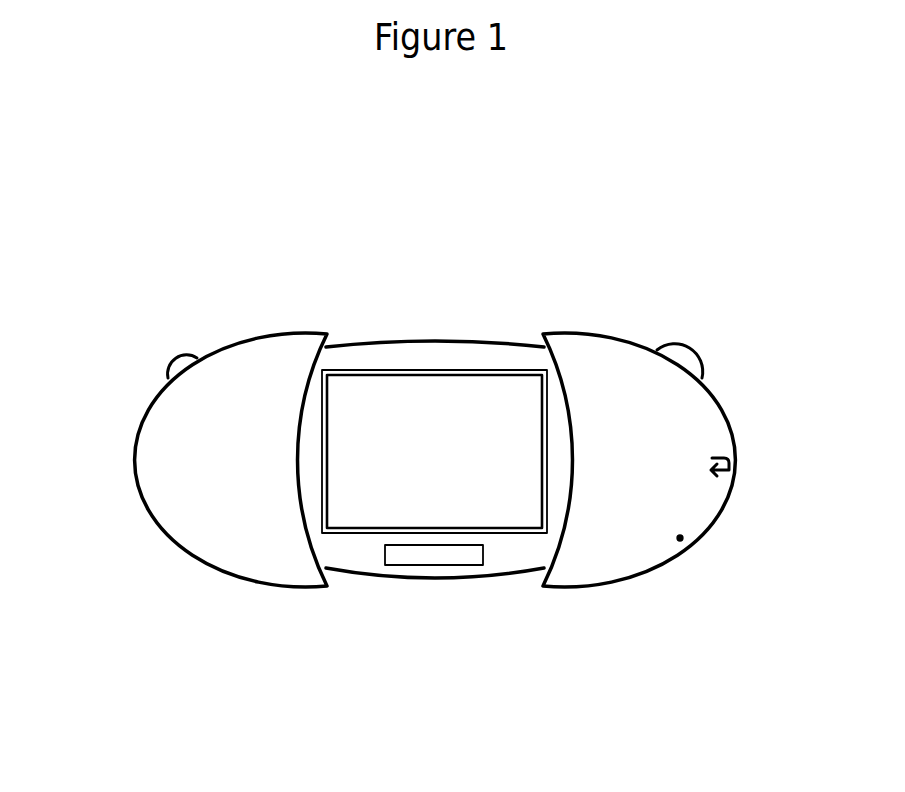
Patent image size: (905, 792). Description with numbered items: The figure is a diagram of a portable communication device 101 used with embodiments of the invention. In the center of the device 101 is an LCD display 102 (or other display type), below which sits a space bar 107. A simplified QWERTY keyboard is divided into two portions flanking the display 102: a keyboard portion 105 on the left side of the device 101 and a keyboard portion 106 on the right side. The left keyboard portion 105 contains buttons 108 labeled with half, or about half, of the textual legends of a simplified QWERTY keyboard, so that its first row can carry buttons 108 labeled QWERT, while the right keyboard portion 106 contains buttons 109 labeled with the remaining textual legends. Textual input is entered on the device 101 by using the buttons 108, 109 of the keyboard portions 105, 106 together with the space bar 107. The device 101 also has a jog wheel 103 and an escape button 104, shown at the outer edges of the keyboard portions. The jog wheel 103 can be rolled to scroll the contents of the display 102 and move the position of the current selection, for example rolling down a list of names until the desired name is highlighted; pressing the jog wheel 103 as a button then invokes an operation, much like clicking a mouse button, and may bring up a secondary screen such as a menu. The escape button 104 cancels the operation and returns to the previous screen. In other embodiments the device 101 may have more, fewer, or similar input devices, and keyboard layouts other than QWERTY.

The portable communication device 101 is at (420, 288).
The LCD display 102 is at (455, 382).
The jog wheel 103 is at (700, 360).
The escape button 104 is at (175, 355).
The keyboard portion 105 is at (172, 514).
The keyboard portion 106 is at (692, 516).
The space bar 107 is at (435, 557).
The buttons 108 is at (232, 557).
The buttons 109 is at (647, 558).